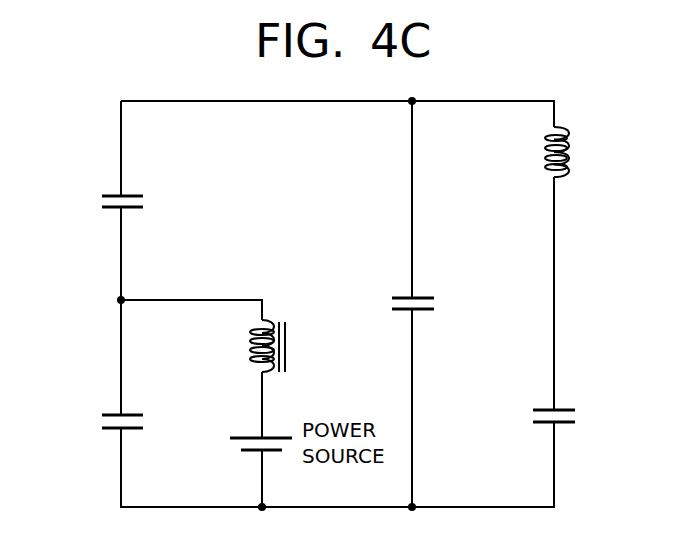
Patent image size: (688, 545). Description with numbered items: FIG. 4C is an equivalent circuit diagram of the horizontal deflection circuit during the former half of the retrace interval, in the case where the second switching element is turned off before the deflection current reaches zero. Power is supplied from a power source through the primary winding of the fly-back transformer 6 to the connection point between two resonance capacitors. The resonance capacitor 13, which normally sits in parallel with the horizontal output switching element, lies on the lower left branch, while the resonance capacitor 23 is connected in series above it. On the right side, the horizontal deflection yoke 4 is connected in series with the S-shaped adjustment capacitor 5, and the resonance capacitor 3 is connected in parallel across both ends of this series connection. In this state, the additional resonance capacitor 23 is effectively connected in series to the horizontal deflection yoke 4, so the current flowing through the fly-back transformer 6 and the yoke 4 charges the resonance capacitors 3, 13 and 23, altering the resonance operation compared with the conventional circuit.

The resonance capacitor 23 is at (97, 203).
The resonance capacitor 13 is at (102, 423).
The resonance capacitor 3 is at (437, 304).
The horizontal deflection yoke 4 is at (565, 153).
The S-shaped adjustment capacitor 5 is at (578, 416).
The fly-back transformer 6 is at (286, 350).